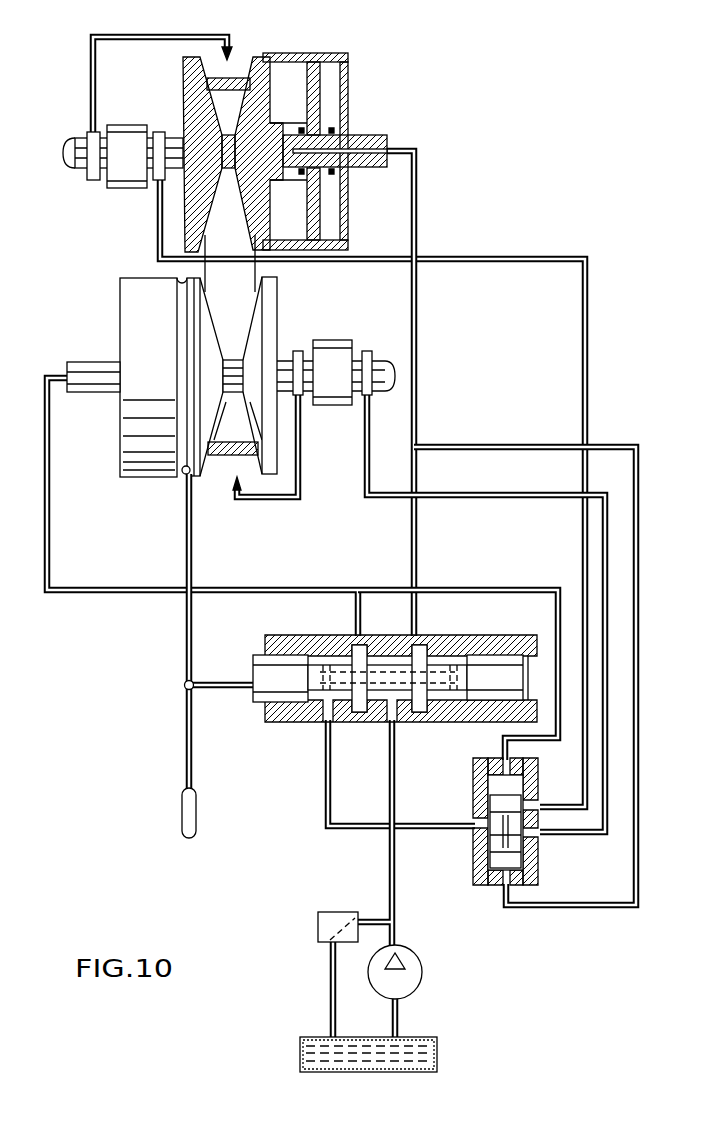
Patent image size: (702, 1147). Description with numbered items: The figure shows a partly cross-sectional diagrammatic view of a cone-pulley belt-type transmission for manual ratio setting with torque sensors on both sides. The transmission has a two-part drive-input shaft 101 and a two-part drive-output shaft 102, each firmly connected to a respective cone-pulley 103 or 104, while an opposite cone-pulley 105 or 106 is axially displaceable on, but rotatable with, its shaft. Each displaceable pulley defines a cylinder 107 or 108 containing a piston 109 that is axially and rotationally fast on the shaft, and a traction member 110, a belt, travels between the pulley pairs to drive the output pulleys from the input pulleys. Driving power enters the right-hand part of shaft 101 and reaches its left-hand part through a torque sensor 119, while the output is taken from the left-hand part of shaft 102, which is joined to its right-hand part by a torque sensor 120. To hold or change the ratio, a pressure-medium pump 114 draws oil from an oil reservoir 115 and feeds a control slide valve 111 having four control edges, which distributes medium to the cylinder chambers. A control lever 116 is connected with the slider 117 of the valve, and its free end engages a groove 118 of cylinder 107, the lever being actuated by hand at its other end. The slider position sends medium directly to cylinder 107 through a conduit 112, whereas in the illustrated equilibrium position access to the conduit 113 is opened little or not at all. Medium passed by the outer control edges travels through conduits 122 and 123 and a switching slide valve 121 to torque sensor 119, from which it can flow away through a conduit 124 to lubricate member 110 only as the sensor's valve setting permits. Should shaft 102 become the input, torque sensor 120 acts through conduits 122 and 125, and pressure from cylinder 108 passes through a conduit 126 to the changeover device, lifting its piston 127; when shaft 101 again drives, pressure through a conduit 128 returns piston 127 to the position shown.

The drive-input shaft 101 is at (83, 371).
The drive-output shaft 102 is at (367, 135).
The cone-pulley 103 is at (271, 314).
The cone-pulley 104 is at (192, 77).
The cone-pulley 105 is at (212, 340).
The cone-pulley 106 is at (262, 55).
The cylinder 107 is at (125, 292).
The cylinder 108 is at (294, 52).
The piston 109 is at (323, 78).
The traction member 110 is at (223, 47).
The control slide valve 111 is at (280, 712).
The conduit 112 is at (135, 590).
The conduit 113 is at (400, 150).
The pressure-medium pump 114 is at (410, 982).
The oil reservoir 115 is at (428, 1054).
The control lever 116 is at (188, 760).
The slider 117 is at (262, 667).
The groove 118 is at (180, 464).
The torque sensor 119 is at (333, 346).
The torque sensor 120 is at (124, 131).
The switching slide valve 121 is at (490, 875).
The conduit 122 is at (330, 782).
The conduit 123 is at (602, 560).
The conduit 124 is at (276, 500).
The conduit 125 is at (543, 256).
The conduit 126 is at (508, 446).
The piston 127 is at (513, 853).
The conduit 128 is at (488, 586).